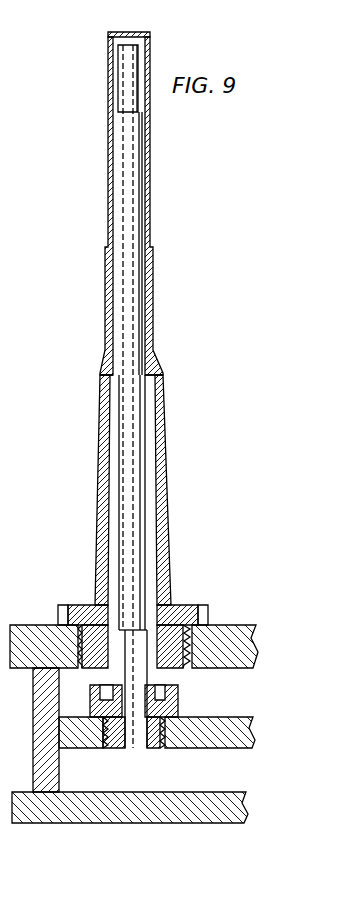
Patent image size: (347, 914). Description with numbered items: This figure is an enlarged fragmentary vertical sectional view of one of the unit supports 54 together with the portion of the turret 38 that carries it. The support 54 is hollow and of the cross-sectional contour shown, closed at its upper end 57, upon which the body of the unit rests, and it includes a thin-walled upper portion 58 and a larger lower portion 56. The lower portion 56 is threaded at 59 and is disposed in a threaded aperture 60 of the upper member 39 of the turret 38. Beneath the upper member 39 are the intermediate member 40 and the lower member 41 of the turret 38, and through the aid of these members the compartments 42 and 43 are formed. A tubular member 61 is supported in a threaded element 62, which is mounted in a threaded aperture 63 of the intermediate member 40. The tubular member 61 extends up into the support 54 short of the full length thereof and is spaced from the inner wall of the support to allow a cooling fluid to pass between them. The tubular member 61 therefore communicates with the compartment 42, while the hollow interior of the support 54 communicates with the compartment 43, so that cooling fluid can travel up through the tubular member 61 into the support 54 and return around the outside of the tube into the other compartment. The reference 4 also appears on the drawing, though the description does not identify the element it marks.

The assembly 4 is at (6, 608).
The bottom plate 38 is at (200, 823).
The top plate 39 is at (232, 630).
The middle plate 40 is at (238, 718).
The plate surface 41 is at (216, 808).
The plate portion 42 is at (120, 782).
The support post 43 is at (67, 688).
The tube shoulder 54 is at (158, 358).
The housing 56 is at (167, 428).
The cap 57 is at (125, 33).
The tube 58 is at (152, 200).
The threaded shank 59 is at (187, 641).
The threads 60 is at (181, 660).
The rod 61 is at (140, 498).
The nut 62 is at (149, 752).
The bushing 63 is at (115, 752).